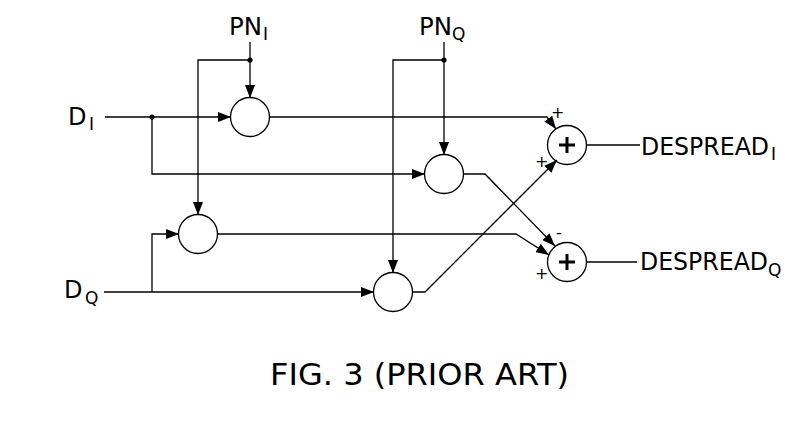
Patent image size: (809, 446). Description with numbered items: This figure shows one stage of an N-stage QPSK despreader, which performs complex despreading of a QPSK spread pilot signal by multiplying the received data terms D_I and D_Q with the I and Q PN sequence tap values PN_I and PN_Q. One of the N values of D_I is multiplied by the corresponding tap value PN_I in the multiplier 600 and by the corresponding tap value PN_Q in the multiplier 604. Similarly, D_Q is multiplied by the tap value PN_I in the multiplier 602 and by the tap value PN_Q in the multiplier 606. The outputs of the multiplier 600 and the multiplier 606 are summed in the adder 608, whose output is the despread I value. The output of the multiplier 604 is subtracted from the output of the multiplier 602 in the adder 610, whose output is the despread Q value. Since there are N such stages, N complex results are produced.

The multiplier 600 is at (265, 104).
The multiplier 602 is at (213, 221).
The multiplier 604 is at (459, 161).
The multiplier 606 is at (402, 274).
The adder 608 is at (578, 126).
The adder 610 is at (577, 243).